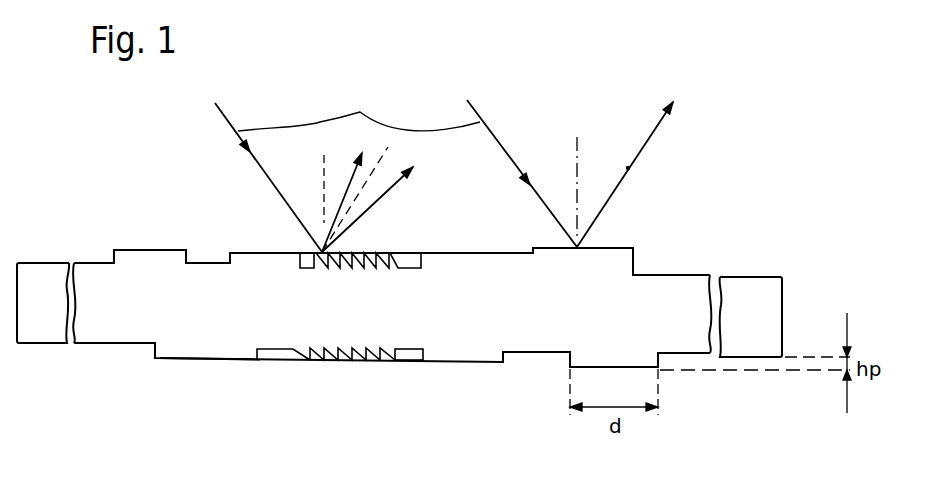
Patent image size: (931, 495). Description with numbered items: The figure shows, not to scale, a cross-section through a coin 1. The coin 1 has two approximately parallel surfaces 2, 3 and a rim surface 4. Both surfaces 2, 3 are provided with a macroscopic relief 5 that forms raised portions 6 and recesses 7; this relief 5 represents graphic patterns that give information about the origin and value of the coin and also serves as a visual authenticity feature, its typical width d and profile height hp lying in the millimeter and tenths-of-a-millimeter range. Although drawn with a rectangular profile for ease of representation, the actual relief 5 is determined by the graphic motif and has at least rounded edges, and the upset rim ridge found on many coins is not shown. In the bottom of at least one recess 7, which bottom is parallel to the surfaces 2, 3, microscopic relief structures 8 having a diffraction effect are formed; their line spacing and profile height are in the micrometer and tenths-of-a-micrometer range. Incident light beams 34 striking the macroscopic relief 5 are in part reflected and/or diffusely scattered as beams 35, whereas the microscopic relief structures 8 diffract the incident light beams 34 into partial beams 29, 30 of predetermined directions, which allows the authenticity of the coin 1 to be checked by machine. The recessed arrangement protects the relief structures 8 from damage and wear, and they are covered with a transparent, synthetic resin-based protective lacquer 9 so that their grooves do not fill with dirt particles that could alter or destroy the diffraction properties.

The coin 1 is at (200, 314).
The surface 2 is at (272, 252).
The surface 3 is at (231, 362).
The rim surface 4 is at (17, 288).
The macroscopic relief 5 is at (237, 242).
The raised portion 6 is at (140, 263).
The recess 7 is at (219, 259).
The microscopic relief structure 8 is at (368, 253).
The protective lacquer 9 is at (408, 253).
The partial beam 29 is at (397, 182).
The partial beam 30 is at (342, 189).
The incident light beam 34 is at (359, 108).
The beam 35 is at (642, 152).